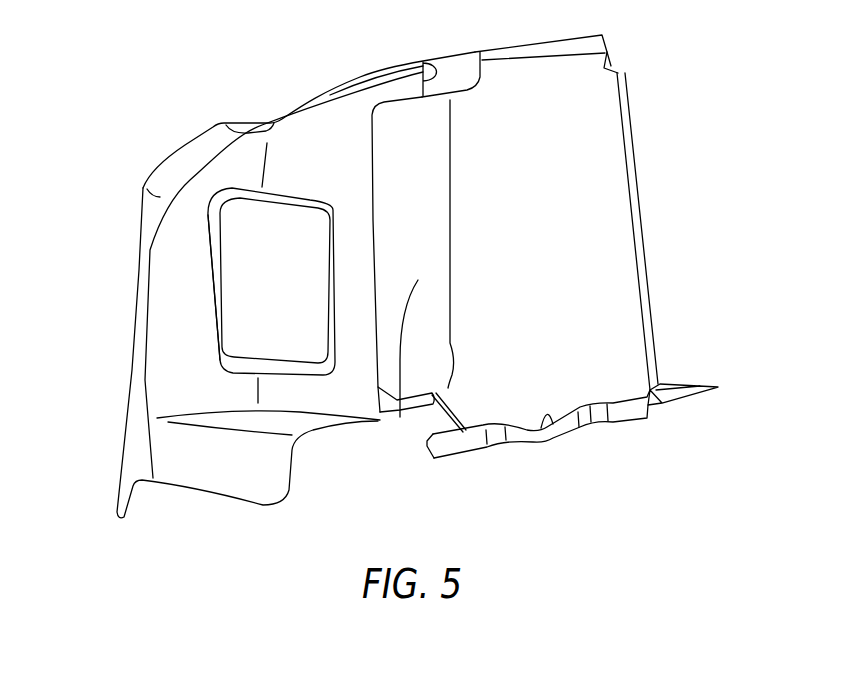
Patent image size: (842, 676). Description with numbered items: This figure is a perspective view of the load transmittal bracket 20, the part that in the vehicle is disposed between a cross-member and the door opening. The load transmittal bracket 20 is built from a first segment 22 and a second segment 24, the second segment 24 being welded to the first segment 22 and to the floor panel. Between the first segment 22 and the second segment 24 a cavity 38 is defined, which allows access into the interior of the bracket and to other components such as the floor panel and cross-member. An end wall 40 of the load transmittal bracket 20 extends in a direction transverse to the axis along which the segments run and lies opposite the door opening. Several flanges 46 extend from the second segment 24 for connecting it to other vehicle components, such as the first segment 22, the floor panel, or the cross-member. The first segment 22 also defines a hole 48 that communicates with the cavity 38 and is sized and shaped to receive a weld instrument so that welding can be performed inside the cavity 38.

The load transmittal bracket 20 is at (141, 105).
The first segment 22 is at (177, 248).
The second segment 24 is at (542, 138).
The cavity 38 is at (240, 284).
The end wall 40 is at (549, 267).
The flanges 46 is at (400, 420).
The hole 48 is at (218, 328).